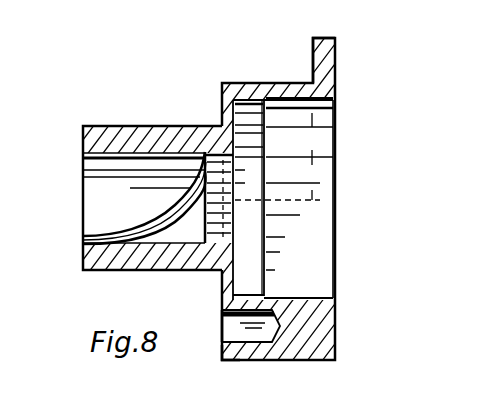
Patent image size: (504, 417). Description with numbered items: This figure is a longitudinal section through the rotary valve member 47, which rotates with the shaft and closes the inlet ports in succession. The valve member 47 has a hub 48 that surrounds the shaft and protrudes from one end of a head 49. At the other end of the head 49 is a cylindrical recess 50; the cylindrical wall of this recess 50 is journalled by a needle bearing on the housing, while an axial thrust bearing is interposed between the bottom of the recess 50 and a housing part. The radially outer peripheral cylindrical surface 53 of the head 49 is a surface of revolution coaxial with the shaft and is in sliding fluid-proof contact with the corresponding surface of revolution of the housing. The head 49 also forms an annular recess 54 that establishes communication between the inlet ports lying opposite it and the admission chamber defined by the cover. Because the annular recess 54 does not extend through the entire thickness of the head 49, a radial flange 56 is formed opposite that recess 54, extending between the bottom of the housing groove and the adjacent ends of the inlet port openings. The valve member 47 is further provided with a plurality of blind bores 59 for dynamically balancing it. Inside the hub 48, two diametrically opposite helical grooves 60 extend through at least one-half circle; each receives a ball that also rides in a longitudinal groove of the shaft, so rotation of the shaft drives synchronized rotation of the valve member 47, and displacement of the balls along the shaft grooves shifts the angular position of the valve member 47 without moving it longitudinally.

The valve member 47 is at (216, 373).
The hub 48 is at (130, 140).
The head 49 is at (227, 90).
The cylindrical recess 50 is at (297, 290).
The radially outer peripheral cylindrical surface 53 is at (264, 360).
The annular recess 54 is at (258, 90).
The radial flange 56 is at (322, 48).
The blind bores 59 is at (225, 334).
The helical grooves 60 is at (97, 175).